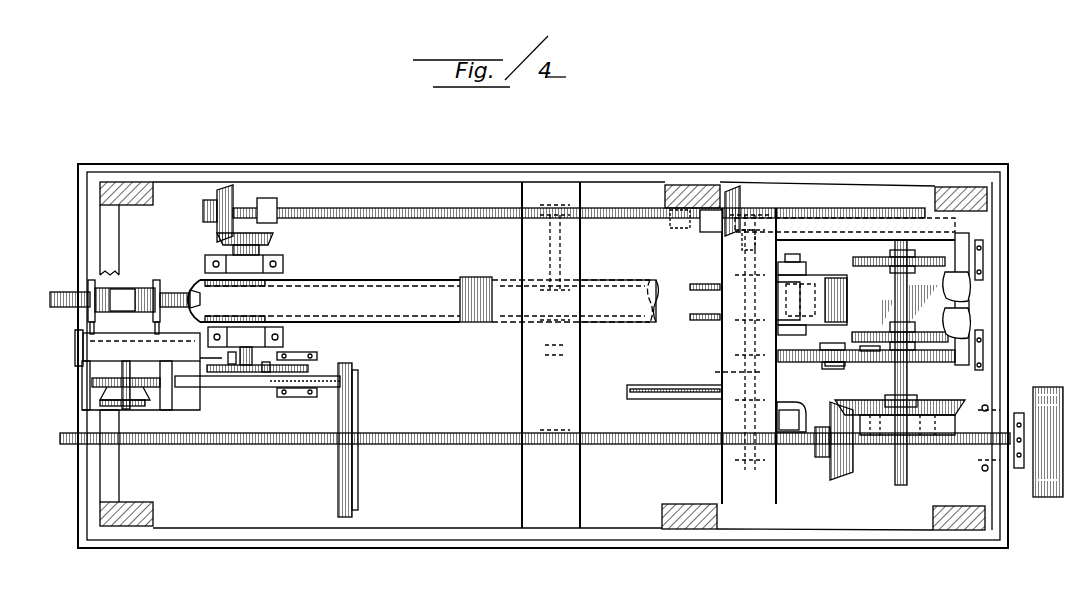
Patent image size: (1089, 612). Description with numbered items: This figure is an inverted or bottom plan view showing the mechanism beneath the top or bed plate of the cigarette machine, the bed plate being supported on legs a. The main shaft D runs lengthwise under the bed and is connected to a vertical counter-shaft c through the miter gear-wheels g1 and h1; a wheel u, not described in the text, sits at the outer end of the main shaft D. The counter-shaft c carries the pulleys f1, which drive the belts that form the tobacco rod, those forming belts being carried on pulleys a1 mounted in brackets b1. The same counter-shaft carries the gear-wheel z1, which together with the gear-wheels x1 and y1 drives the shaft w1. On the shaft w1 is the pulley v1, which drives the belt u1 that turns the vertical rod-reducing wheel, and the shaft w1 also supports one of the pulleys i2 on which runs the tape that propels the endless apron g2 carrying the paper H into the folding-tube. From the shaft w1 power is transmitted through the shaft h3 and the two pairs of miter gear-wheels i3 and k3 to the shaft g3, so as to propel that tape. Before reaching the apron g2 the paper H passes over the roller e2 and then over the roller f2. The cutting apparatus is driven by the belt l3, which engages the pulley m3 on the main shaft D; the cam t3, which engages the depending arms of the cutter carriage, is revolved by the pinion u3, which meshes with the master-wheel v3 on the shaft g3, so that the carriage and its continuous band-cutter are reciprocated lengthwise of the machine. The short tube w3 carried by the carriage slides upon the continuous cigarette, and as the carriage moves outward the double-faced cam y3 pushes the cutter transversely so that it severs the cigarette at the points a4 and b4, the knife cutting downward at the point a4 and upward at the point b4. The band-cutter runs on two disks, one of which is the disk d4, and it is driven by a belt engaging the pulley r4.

The legs a is at (127, 190).
The shaft h3 is at (428, 212).
The miter gear-wheels i3 is at (228, 190).
The miter gear-wheels k3 is at (273, 240).
The endless tape or apron g2 is at (406, 300).
The paper H is at (488, 278).
The pulleys i2 is at (318, 278).
The pulley or disk d4 is at (140, 292).
The short tube w3 is at (60, 295).
The severing point b4 is at (88, 318).
The severing point a4 is at (150, 338).
The pulley r4 is at (152, 395).
The cam y3 is at (110, 392).
The shaft g3 is at (260, 352).
The cam t3 is at (350, 372).
The pulley m3 is at (352, 410).
The belt l3 is at (338, 462).
The master-wheel v3 is at (232, 360).
The pinion u3 is at (268, 368).
The main shaft D is at (535, 454).
The belt u1 is at (676, 400).
The shaft w1 is at (710, 367).
The roller e2 is at (808, 278).
The counter-shaft c is at (910, 378).
The roller f2 is at (853, 262).
The pulleys f1 is at (878, 336).
The gear-wheel x1 is at (866, 364).
The gear-wheel y1 is at (835, 364).
The gear-wheel z1 is at (868, 352).
The brackets b1 is at (968, 276).
The pulleys a1 is at (966, 290).
The miter gear-wheel h1 is at (898, 420).
The miter gear-wheel g1 is at (845, 478).
The pulley v1 is at (790, 440).
The hand wheel u is at (1048, 392).